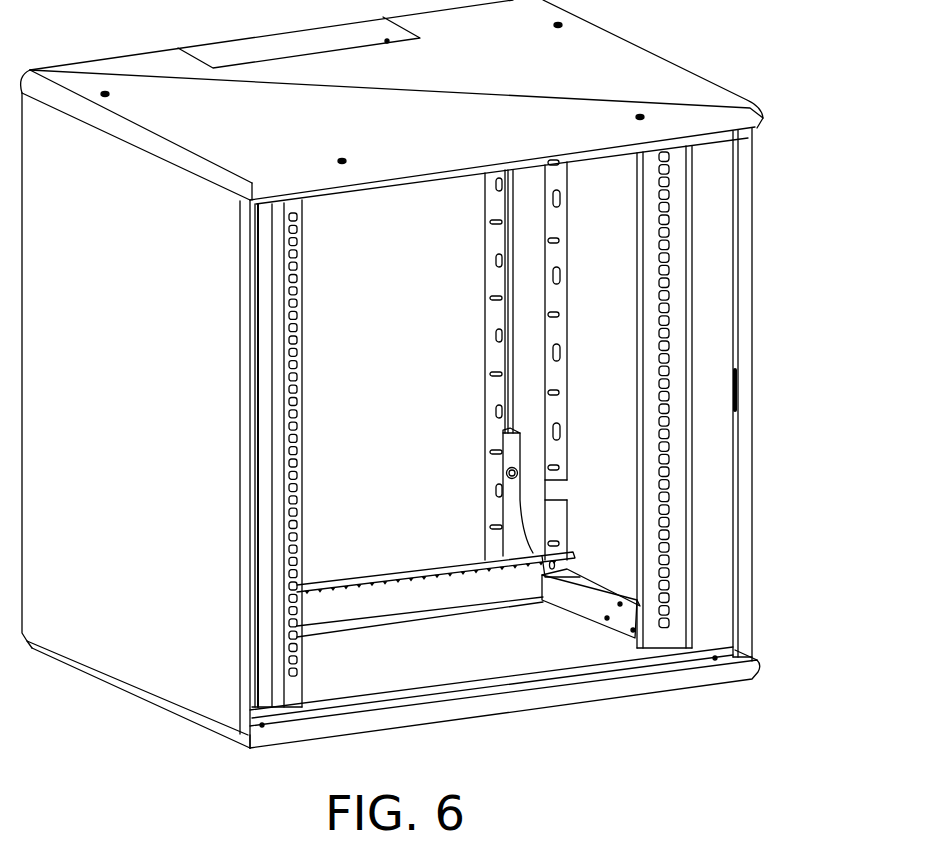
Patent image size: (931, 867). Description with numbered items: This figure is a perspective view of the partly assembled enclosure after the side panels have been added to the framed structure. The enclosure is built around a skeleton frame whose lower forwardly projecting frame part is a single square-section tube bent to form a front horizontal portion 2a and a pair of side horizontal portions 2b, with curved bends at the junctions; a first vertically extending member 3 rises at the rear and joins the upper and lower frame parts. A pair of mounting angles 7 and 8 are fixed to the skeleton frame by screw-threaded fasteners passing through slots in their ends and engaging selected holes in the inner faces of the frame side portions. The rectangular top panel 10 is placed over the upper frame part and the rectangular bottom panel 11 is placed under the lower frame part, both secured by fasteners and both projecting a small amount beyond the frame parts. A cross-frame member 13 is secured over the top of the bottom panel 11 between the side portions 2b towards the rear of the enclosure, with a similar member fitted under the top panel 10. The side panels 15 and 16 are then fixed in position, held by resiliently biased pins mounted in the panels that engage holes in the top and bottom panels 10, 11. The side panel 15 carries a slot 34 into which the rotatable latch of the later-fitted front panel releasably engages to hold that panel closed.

The top panel 10 is at (431, 96).
The side panel 16 is at (146, 407).
The bottom panel 11 is at (434, 674).
The mounting angle 8 is at (280, 440).
The first vertically extending member 3 is at (532, 295).
The mounting angle 7 is at (680, 483).
The side panel 15 is at (716, 277).
The slot 34 is at (732, 396).
The cross-frame member 13 is at (485, 592).
The side horizontal portion 2b is at (572, 600).
The front horizontal portion 2a is at (530, 674).